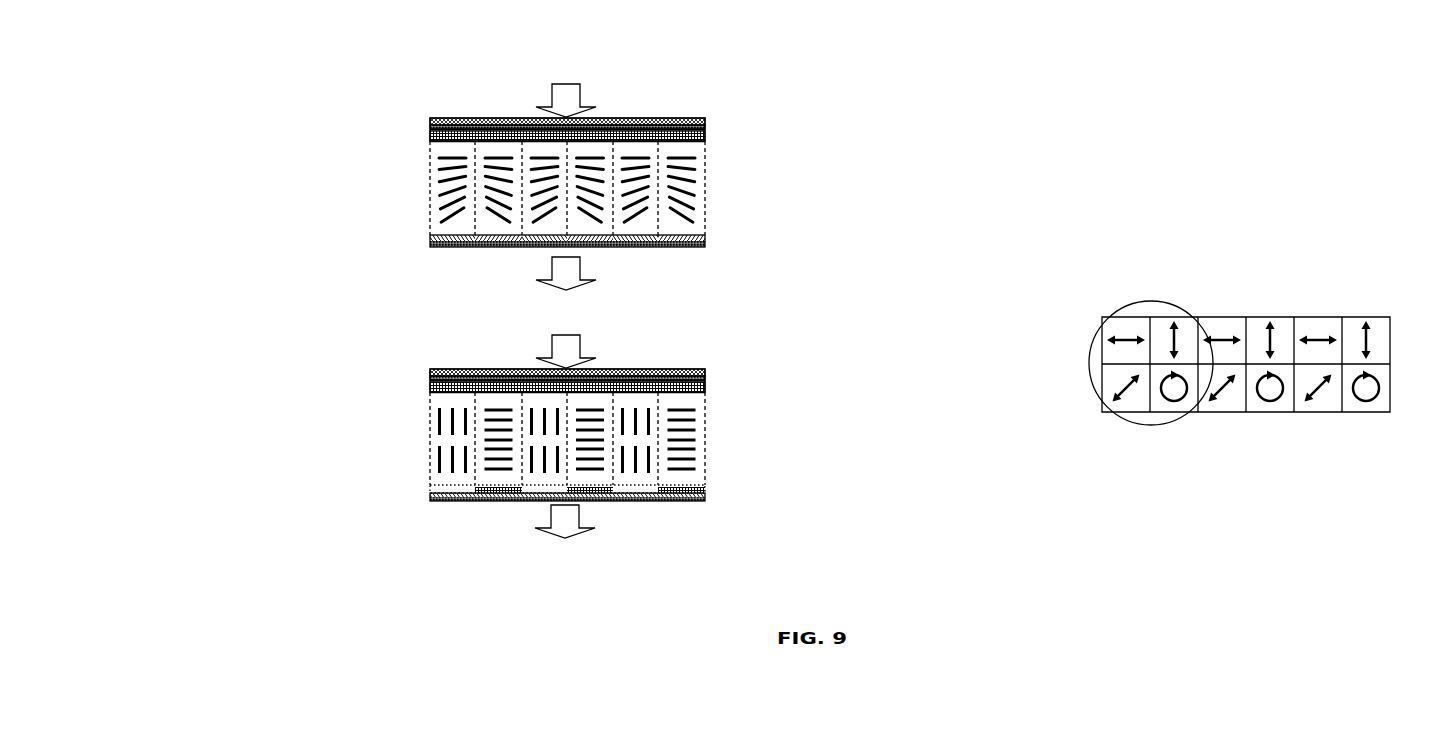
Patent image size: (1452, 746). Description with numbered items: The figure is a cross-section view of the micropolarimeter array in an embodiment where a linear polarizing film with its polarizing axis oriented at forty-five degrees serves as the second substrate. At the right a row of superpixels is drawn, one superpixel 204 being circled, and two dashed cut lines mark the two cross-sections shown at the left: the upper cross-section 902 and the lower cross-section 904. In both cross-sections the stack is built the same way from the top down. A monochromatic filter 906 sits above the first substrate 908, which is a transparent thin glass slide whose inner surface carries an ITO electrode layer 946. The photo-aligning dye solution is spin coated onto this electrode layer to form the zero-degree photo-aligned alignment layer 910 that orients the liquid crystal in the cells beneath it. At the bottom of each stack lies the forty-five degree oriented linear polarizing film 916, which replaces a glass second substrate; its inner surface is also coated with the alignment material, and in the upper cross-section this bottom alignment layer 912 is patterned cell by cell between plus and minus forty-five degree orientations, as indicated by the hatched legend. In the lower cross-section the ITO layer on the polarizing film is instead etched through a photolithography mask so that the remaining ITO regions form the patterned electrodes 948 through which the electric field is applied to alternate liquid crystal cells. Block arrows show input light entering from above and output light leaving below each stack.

The cross-section of superpixel row with 45/-45 degree photo-aligned SD1 902 is at (1440, 338).
The cross-section of superpixel row with patterned ITO electrode 904 is at (1440, 387).
The monochromatic filter 906 is at (430, 121).
The first substrate 908 is at (430, 127).
The ITO electrode layer 946 is at (430, 134).
The 0 degree photo-aligned SD1 layer 910 is at (430, 142).
The patterned photo-aligned SD1 / patterned ITO electrode layer 912 is at (695, 236).
The polarizing film 916 is at (430, 495).
The electrodes 948 is at (454, 489).
The superpixel 204 is at (1159, 290).